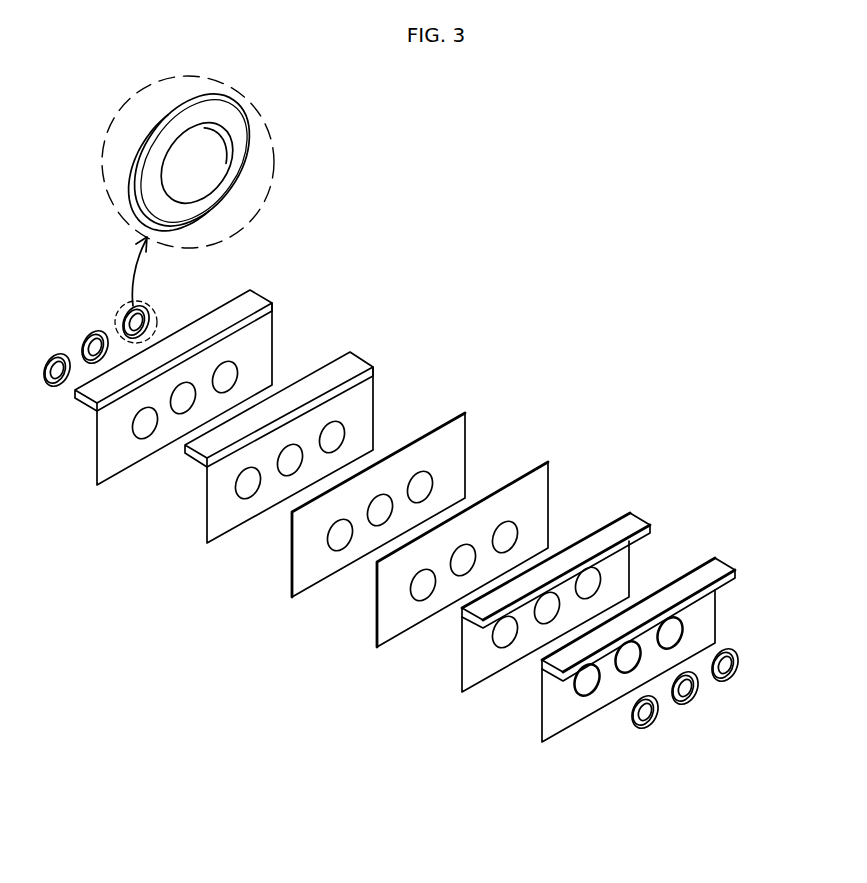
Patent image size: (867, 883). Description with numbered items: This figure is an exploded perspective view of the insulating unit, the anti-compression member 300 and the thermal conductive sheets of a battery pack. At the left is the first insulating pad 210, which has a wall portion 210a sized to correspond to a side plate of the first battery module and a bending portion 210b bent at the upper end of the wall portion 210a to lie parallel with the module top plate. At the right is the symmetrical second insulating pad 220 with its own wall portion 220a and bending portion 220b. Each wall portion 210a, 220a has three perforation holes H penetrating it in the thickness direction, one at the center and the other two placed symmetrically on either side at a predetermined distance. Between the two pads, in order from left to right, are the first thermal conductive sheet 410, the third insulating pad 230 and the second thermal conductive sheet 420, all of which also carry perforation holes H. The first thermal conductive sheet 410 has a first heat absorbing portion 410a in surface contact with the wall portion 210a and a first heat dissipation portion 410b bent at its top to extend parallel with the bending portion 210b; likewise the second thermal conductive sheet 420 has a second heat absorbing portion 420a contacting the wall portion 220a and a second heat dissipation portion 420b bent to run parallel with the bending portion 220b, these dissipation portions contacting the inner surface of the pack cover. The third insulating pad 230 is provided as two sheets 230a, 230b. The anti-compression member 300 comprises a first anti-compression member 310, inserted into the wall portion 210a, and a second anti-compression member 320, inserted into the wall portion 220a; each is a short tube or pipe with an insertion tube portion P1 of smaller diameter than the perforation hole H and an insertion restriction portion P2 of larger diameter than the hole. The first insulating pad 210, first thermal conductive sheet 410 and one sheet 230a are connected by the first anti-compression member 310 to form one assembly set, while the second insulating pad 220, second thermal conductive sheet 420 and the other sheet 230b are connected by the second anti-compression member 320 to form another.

The first insulating pad 210 is at (220, 357).
The wall portion of first insulating pad 210a is at (272, 333).
The bending portion of first insulating pad 210b is at (250, 294).
The first thermal conductive sheet 410 is at (326, 418).
The first heat absorbing portion 410a is at (367, 397).
The first heat dissipation portion 410b is at (353, 358).
The third insulating pad 230 is at (461, 513).
The first sheet of third insulating pad 230a is at (458, 450).
The second sheet of third insulating pad 230b is at (543, 498).
The second thermal conductive sheet 420 is at (606, 573).
The second heat absorbing portion 420a is at (620, 568).
The second heat dissipation portion 420b is at (633, 517).
The second insulating pad 220 is at (688, 630).
The wall portion of second insulating pad 220a is at (677, 652).
The bending portion of second insulating pad 220b is at (720, 561).
The anti-compression member 300 is at (138, 666).
The first anti-compression member 310 is at (123, 311).
The second anti-compression member 320 is at (724, 683).
The perforation hole H is at (591, 684).
The insertion tube portion P1 is at (175, 227).
The insertion restriction portion P2 is at (138, 211).